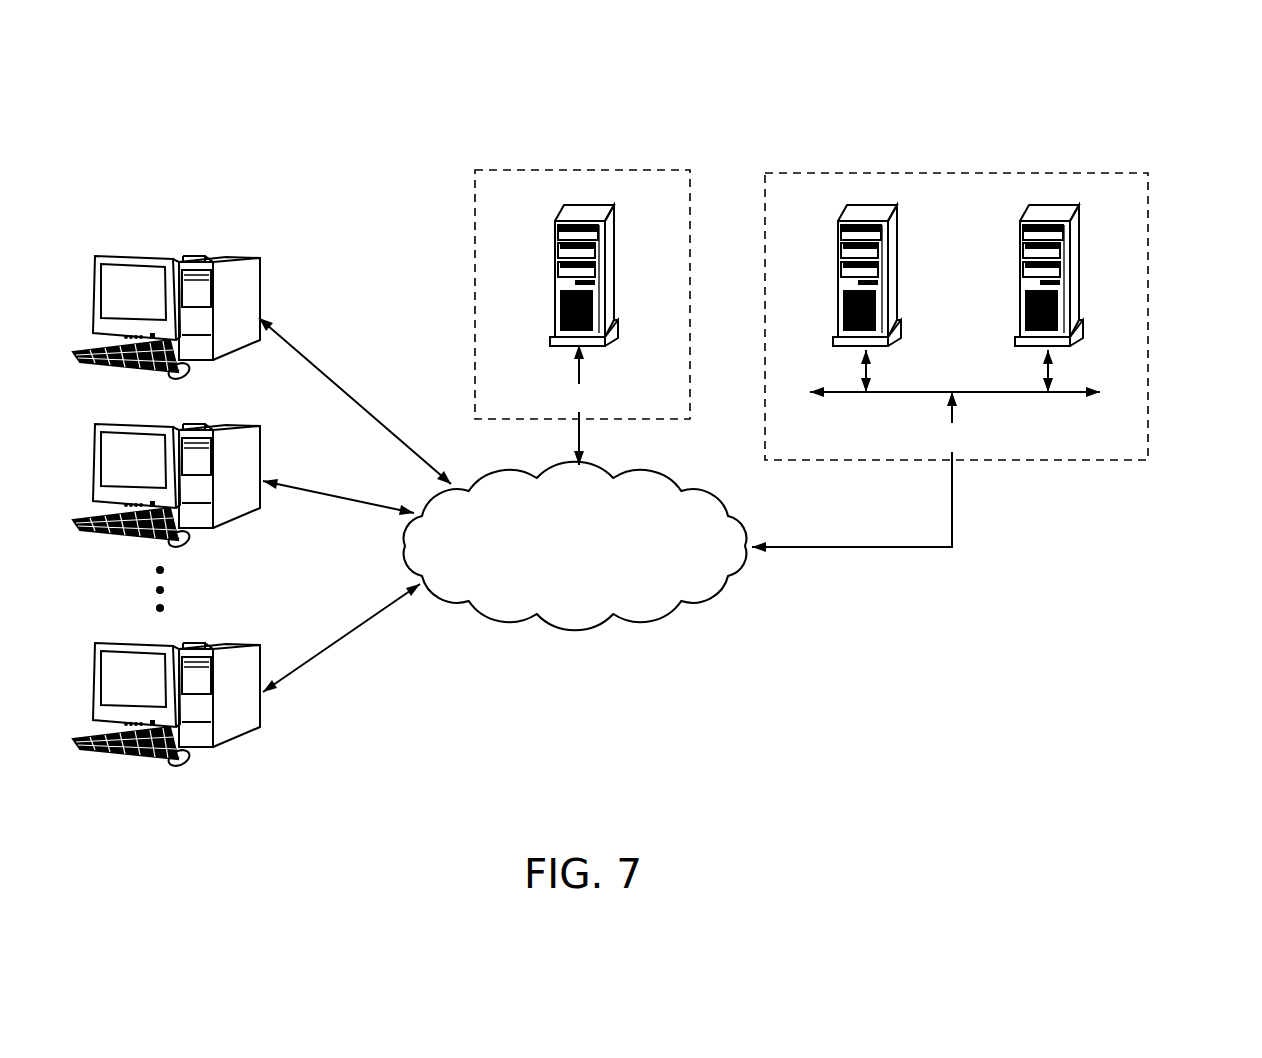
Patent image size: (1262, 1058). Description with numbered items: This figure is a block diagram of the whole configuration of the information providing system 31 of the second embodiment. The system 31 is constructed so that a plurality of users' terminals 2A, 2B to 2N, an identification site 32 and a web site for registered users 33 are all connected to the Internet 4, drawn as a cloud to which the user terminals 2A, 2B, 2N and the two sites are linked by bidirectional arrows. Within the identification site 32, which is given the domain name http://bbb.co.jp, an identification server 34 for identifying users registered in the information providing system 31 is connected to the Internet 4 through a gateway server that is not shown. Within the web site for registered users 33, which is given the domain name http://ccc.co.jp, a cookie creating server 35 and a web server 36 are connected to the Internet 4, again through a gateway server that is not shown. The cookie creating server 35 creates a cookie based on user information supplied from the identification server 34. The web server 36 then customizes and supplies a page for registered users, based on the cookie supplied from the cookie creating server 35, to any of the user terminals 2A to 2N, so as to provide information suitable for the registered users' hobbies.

The user terminal 2A is at (96, 303).
The user terminal 2B is at (96, 471).
The user terminal 2N is at (96, 683).
The Internet 4 is at (650, 624).
The information providing system 31 is at (1013, 670).
The identification site 32 is at (494, 170).
The web site for registered users 33 is at (812, 173).
The identification server 34 is at (582, 205).
The cookie creating server 35 is at (866, 205).
The web server 36 is at (1047, 205).